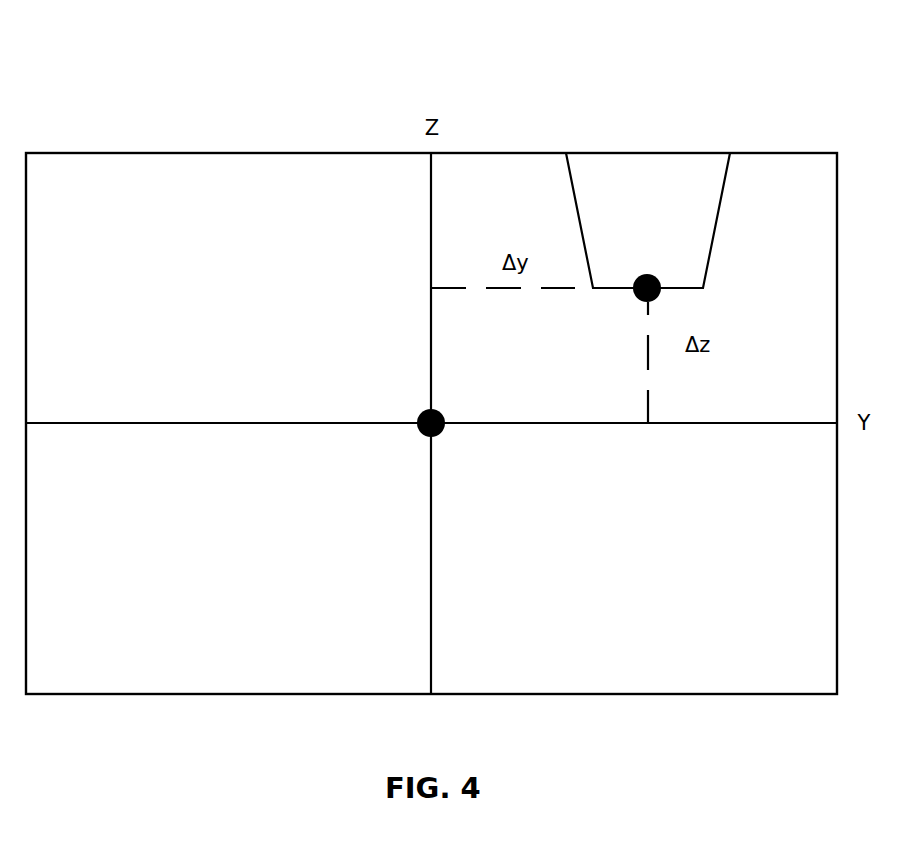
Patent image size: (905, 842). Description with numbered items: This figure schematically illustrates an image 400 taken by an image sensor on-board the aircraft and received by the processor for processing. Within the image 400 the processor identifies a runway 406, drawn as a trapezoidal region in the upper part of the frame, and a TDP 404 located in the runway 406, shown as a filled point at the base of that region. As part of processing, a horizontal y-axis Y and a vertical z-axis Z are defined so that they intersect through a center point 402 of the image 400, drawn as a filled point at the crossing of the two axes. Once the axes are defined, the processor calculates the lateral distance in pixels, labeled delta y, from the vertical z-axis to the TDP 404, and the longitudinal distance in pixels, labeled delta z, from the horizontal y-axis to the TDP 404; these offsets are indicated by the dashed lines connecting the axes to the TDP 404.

The image 400 is at (702, 73).
The center point 402 is at (413, 436).
The TDP 404 is at (647, 276).
The runway 406 is at (670, 192).